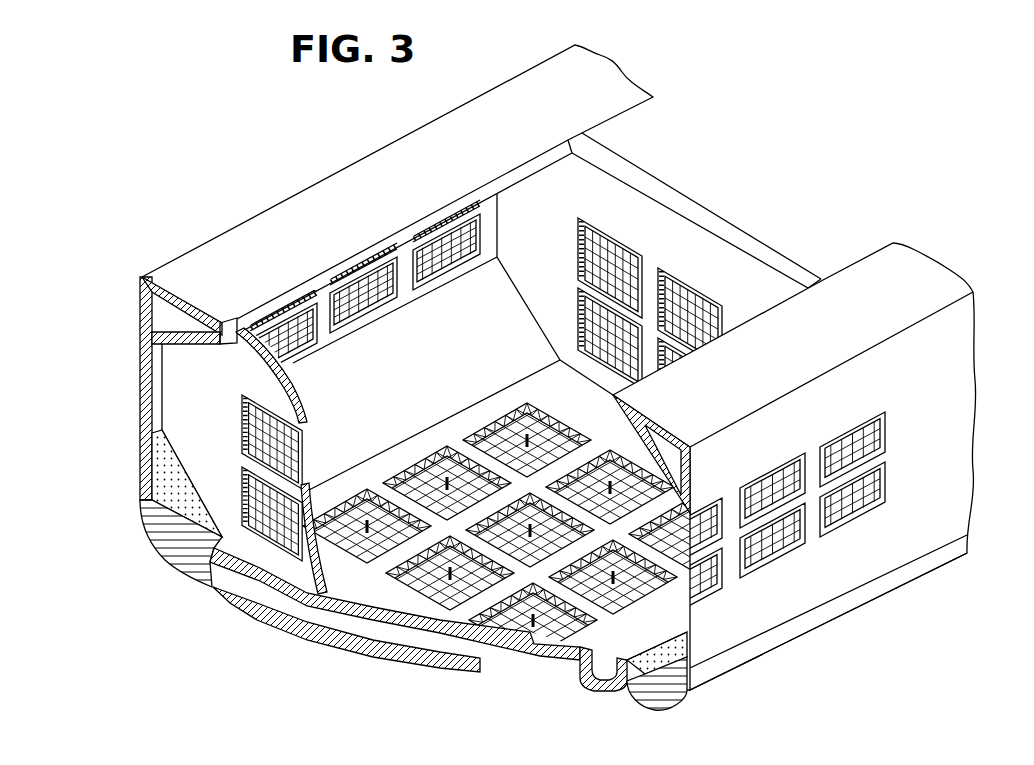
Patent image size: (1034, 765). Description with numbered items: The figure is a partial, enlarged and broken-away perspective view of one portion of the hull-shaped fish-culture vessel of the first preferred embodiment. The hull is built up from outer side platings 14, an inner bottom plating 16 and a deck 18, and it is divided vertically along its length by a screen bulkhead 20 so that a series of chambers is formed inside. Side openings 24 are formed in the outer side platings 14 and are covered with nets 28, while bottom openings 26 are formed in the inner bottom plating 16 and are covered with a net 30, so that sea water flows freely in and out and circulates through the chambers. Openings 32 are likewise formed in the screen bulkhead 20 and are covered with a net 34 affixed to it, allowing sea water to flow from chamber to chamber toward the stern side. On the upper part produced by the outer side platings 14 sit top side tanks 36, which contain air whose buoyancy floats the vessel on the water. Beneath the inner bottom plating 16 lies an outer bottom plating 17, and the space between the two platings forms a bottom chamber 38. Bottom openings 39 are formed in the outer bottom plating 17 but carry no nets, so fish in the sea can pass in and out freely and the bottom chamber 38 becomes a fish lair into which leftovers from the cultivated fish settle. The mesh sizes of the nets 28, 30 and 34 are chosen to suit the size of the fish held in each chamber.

The outer side platings 14 is at (140, 397).
The inner bottom plating 16 is at (343, 606).
The outer bottom plating 17 is at (263, 621).
The deck 18 is at (182, 325).
The screen bulkhead 20 is at (697, 210).
The side openings 24 is at (887, 484).
The bottom openings 26 is at (403, 590).
The nets 28 is at (887, 415).
The net 30 is at (473, 562).
The openings 32 is at (597, 227).
The net 34 is at (713, 300).
The top side tanks 36 is at (150, 318).
The bottom chamber 38 is at (233, 580).
The bottom openings 39 is at (548, 640).